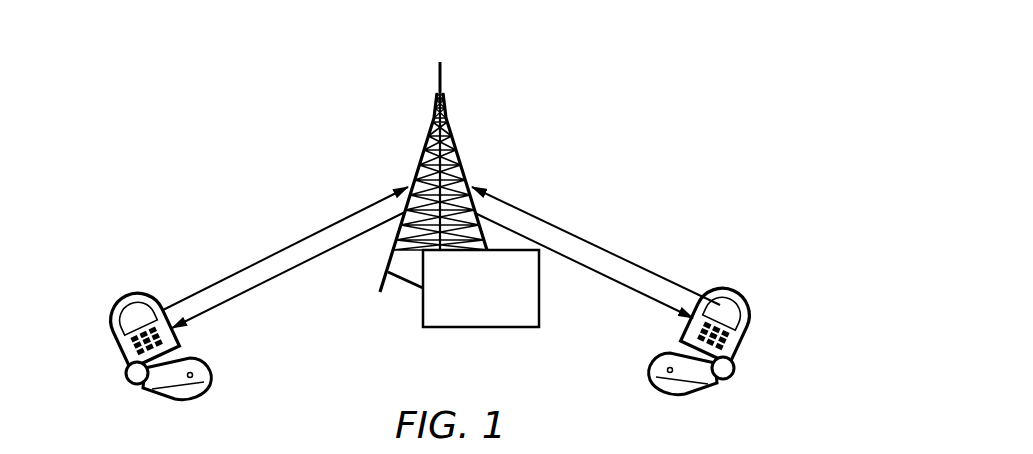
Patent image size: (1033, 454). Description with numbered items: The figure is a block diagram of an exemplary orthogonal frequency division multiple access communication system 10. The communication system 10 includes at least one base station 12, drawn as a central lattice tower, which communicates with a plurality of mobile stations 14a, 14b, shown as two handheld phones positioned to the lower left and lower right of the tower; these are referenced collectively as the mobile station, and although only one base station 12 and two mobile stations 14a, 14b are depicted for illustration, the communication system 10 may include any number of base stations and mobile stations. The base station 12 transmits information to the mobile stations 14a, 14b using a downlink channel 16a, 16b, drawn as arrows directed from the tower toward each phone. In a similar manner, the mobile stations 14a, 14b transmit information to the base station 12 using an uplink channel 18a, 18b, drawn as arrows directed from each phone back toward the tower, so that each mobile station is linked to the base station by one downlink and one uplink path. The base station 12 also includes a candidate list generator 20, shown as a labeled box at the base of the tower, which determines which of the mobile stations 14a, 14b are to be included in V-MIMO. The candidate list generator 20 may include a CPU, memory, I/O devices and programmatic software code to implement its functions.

The OFDMA communication system 10 is at (710, 33).
The base station 12 is at (458, 155).
The mobile station 14a is at (117, 357).
The mobile station 14b is at (735, 372).
The downlink channel 16a is at (248, 295).
The downlink channel 16b is at (640, 295).
The uplink channel 18a is at (263, 258).
The uplink channel 18b is at (648, 277).
The candidate list generator 20 is at (482, 327).